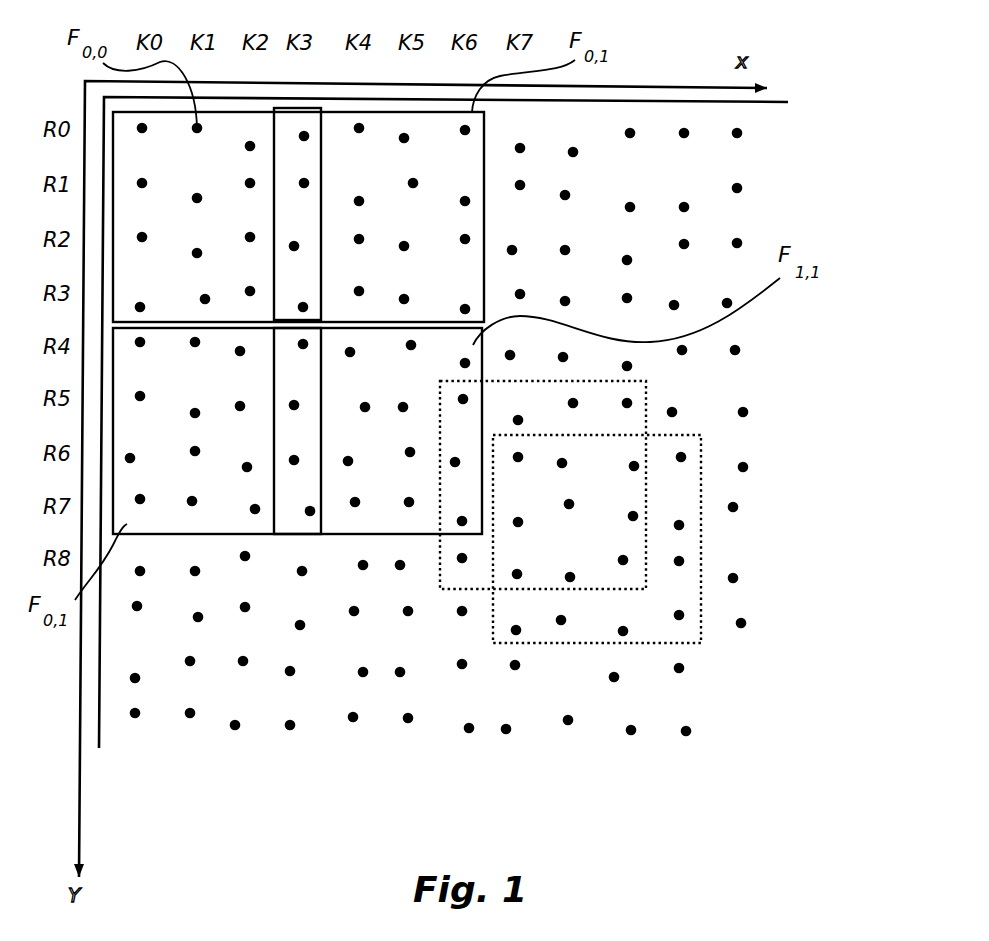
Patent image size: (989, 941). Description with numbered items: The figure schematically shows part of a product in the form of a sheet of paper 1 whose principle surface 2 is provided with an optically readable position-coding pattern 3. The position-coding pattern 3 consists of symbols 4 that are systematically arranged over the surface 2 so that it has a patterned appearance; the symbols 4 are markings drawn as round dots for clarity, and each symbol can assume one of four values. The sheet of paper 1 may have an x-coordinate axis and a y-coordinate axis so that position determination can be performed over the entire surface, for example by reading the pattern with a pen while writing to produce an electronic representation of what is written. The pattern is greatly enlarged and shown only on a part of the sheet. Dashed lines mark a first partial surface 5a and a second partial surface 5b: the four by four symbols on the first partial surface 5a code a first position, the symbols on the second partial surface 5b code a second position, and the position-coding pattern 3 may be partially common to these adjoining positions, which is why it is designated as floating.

The sheet of paper 1 is at (792, 95).
The principle surface 2 is at (419, 799).
The position-coding pattern 3 is at (292, 738).
The symbols 4 is at (570, 722).
The first partial surface 5a is at (637, 397).
The second partial surface 5b is at (692, 475).